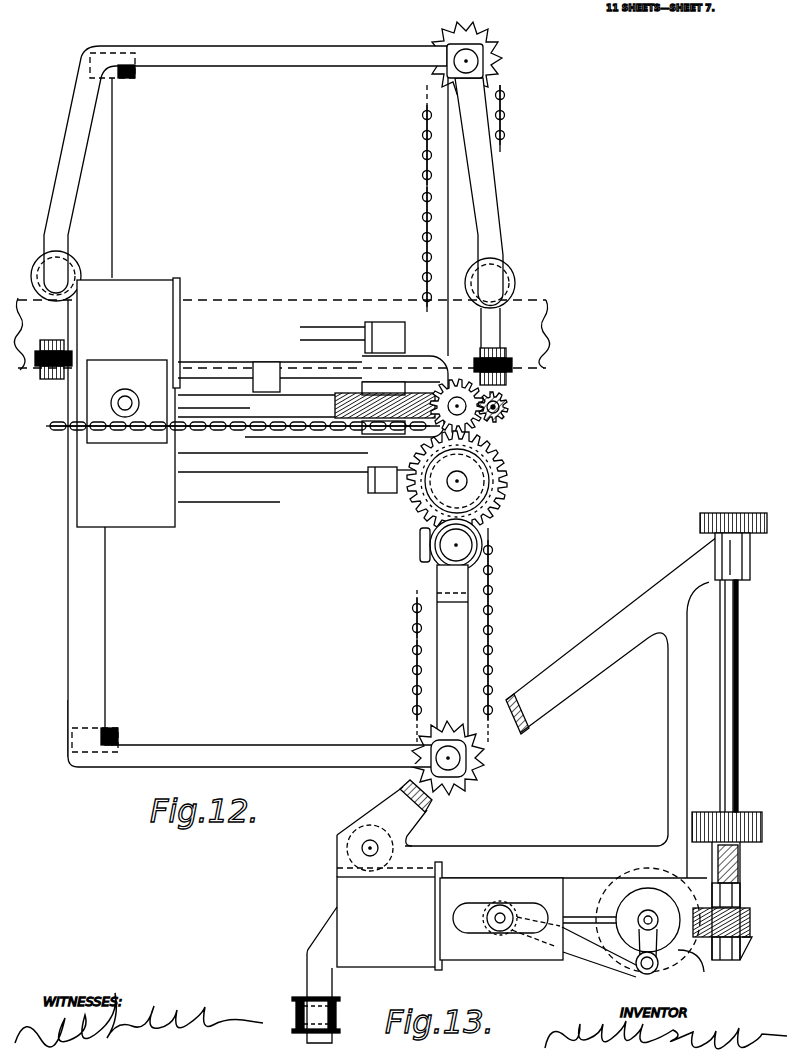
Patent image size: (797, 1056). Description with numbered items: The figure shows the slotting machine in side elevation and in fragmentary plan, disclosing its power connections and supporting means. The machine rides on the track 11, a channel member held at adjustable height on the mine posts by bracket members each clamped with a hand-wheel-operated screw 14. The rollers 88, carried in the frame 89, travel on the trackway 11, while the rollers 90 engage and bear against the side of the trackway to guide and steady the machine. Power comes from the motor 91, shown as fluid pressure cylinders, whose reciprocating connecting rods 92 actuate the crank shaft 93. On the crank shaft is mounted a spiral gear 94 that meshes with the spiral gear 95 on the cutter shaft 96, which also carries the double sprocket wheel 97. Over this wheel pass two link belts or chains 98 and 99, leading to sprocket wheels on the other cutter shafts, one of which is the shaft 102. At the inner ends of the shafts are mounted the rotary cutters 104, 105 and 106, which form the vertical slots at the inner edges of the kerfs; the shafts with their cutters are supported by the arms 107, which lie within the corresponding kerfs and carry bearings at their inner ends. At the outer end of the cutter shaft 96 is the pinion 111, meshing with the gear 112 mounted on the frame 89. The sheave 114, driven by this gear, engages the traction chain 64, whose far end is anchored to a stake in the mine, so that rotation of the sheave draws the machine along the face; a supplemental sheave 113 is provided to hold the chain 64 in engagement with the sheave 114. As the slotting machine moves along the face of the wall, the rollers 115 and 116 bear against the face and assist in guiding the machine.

In FIG. 12, the track 11 is at (318, 306).
In FIG. 13, the hand-wheel-operated screw 14 is at (640, 870).
In FIG. 12, the traction chain 64 is at (200, 440).
In FIG. 12, the rollers 88 is at (76, 275).
In FIG. 13, the rollers 88 is at (338, 1012).
In FIG. 12, the frame 89 is at (62, 193).
In FIG. 13, the frame 89 is at (315, 960).
In FIG. 12, the rollers 90 is at (40, 376).
In FIG. 12, the motor 91 is at (124, 517).
In FIG. 13, the motor 91 is at (389, 916).
In FIG. 12, the connecting rods 92 is at (313, 336).
In FIG. 13, the connecting rods 92 is at (595, 957).
In FIG. 12, the crank shaft 93 is at (387, 492).
In FIG. 13, the crank shaft 93 is at (646, 930).
In FIG. 12, the spiral gear 94 is at (335, 408).
In FIG. 12, the spiral gear 95 is at (498, 404).
In FIG. 13, the spiral gear 95 is at (742, 912).
In FIG. 12, the cutter shaft 96 is at (482, 432).
In FIG. 13, the cutter shaft 96 is at (740, 667).
In FIG. 13, the double sprocket wheel 97 is at (740, 814).
In FIG. 12, the link belt or chain 98 is at (427, 165).
In FIG. 12, the link belt or chain 99 is at (430, 635).
In FIG. 12, the shaft 102 is at (478, 62).
In FIG. 12, the rotary cutter 104 is at (490, 52).
In FIG. 12, the rotary cutter 105 is at (500, 411).
In FIG. 13, the rotary cutter 105 is at (708, 515).
In FIG. 12, the rotary cutter 106 is at (474, 765).
In FIG. 13, the arms 107 is at (598, 656).
In FIG. 12, the pinion 111 is at (455, 398).
In FIG. 12, the gear 112 is at (498, 503).
In FIG. 12, the supplemental sheave 113 is at (484, 552).
In FIG. 12, the sheave 114 is at (470, 482).
In FIG. 12, the roller 115 is at (120, 732).
In FIG. 12, the roller 116 is at (136, 77).
In FIG. 13, the roller 116 is at (342, 847).